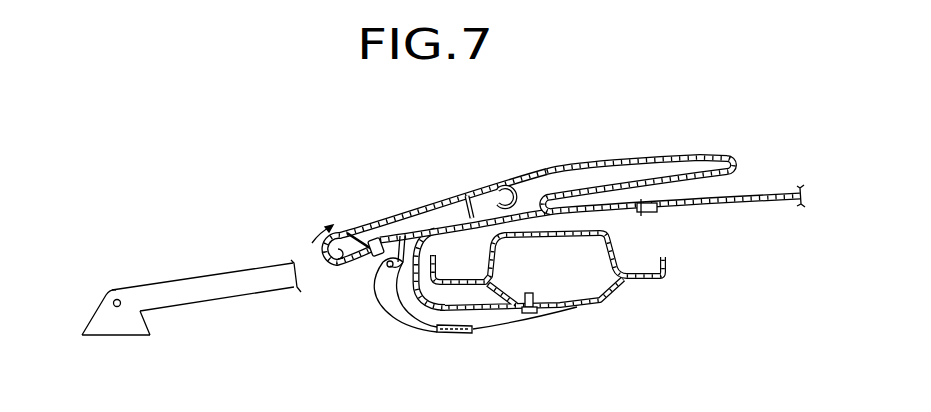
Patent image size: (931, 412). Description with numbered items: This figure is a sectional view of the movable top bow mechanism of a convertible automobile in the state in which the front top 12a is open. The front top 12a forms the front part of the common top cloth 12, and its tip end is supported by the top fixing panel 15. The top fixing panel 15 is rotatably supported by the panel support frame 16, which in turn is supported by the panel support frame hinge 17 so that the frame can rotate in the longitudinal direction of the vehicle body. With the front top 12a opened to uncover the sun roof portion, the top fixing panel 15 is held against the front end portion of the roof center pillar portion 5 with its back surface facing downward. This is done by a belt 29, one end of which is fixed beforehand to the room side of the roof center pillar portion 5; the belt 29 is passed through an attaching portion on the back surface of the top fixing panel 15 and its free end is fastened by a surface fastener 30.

The roof center pillar portion 5 is at (613, 246).
The top cloth 12 is at (765, 192).
The front top 12a is at (655, 157).
The top fixing panel 15 is at (441, 198).
The panel support frame 16 is at (262, 288).
The panel support frame hinge 17 is at (132, 333).
The belt 29 is at (392, 316).
The surface fastener 30 is at (476, 332).